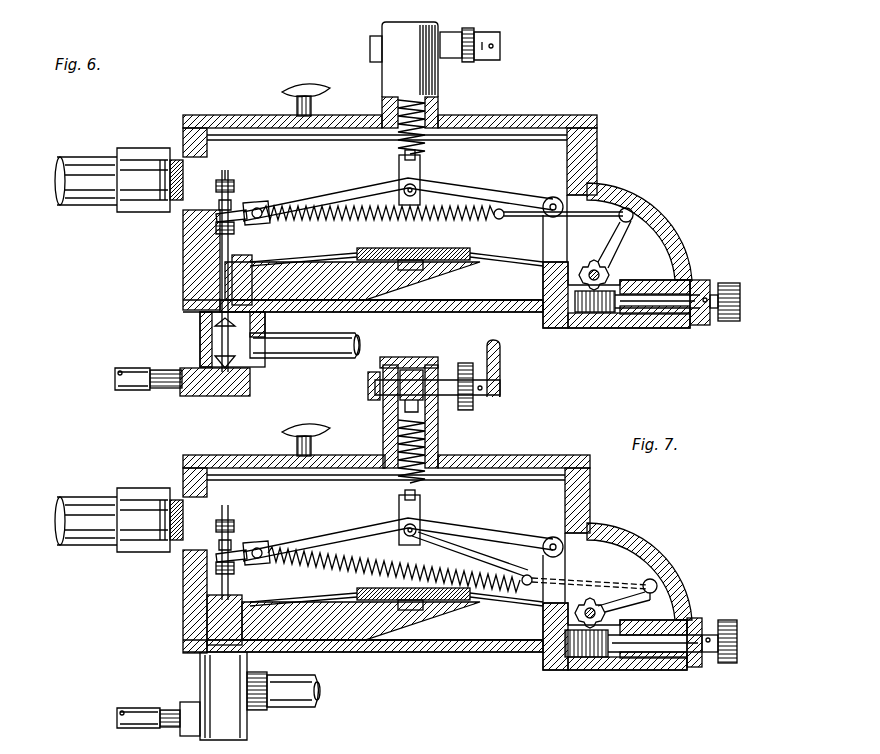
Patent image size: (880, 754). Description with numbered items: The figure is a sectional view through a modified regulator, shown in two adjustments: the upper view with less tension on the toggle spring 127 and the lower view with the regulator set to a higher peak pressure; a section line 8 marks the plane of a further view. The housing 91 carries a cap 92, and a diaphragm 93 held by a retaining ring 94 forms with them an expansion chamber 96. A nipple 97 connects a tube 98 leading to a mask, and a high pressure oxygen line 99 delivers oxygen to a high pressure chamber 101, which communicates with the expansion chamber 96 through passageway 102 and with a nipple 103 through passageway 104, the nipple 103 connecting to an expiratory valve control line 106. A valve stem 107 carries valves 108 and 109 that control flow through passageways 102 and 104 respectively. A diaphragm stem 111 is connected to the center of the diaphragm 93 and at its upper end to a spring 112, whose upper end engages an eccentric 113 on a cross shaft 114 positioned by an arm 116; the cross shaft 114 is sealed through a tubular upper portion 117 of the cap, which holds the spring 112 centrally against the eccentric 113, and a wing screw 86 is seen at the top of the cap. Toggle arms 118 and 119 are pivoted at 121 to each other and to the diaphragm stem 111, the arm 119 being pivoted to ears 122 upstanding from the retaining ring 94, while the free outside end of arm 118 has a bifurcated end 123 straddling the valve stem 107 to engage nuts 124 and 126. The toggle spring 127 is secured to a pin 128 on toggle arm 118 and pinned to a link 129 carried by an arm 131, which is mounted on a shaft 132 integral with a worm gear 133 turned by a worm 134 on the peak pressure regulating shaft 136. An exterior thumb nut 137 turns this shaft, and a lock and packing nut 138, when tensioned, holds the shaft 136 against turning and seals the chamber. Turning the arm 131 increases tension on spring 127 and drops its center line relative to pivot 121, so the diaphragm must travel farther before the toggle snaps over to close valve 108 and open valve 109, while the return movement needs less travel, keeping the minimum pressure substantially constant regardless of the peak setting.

In FIG. 6, the section line 8 is at (175, 140).
In FIG. 6, the wing screw 86 is at (282, 92).
In FIG. 6, the housing 91 is at (645, 200).
In FIG. 7, the housing 91 is at (578, 500).
In FIG. 6, the cap 92 is at (553, 127).
In FIG. 7, the cap 92 is at (565, 455).
In FIG. 6, the diaphragm 93 is at (480, 290).
In FIG. 7, the diaphragm 93 is at (478, 630).
In FIG. 6, the retaining ring 94 is at (525, 305).
In FIG. 7, the retaining ring 94 is at (520, 633).
In FIG. 6, the expansion chamber 96 is at (497, 140).
In FIG. 7, the expansion chamber 96 is at (530, 490).
In FIG. 6, the nipple 97 is at (162, 202).
In FIG. 7, the nipple 97 is at (162, 545).
In FIG. 6, the tube 98 is at (72, 160).
In FIG. 7, the tube 98 is at (80, 562).
In FIG. 6, the high pressure oxygen line 99 is at (292, 350).
In FIG. 7, the high pressure oxygen line 99 is at (292, 700).
In FIG. 6, the high pressure chamber 101 is at (210, 326).
In FIG. 6, the passageway 102 is at (210, 270).
In FIG. 7, the passageway 102 is at (331, 601).
In FIG. 6, the nipple 103 is at (165, 390).
In FIG. 7, the nipple 103 is at (170, 728).
In FIG. 6, the passageway 104 is at (210, 396).
In FIG. 6, the expiratory valve control line 106 is at (122, 372).
In FIG. 7, the expiratory valve control line 106 is at (120, 725).
In FIG. 6, the valve stem 107 is at (232, 198).
In FIG. 7, the valve stem 107 is at (212, 580).
In FIG. 6, the valve 108 is at (183, 300).
In FIG. 6, the valve 109 is at (210, 346).
In FIG. 6, the diaphragm stem 111 is at (420, 176).
In FIG. 7, the diaphragm stem 111 is at (420, 504).
In FIG. 6, the spring 112 is at (428, 118).
In FIG. 7, the spring 112 is at (440, 458).
In FIG. 7, the eccentric 113 is at (438, 400).
In FIG. 7, the cross shaft 114 is at (503, 392).
In FIG. 6, the arm 116 is at (503, 44).
In FIG. 7, the arm 116 is at (503, 362).
In FIG. 6, the tubular upper portion 117 is at (382, 72).
In FIG. 6, the toggle arm 118 is at (345, 197).
In FIG. 7, the toggle arm 118 is at (345, 527).
In FIG. 6, the toggle arm 119 is at (530, 198).
In FIG. 7, the toggle arm 119 is at (530, 535).
In FIG. 6, the pivot point 121 is at (478, 200).
In FIG. 6, the ear 122 is at (598, 191).
In FIG. 7, the ear 122 is at (578, 550).
In FIG. 6, the bifurcated end 123 is at (215, 216).
In FIG. 7, the bifurcated end 123 is at (237, 553).
In FIG. 6, the nut 124 is at (236, 185).
In FIG. 7, the nut 124 is at (236, 520).
In FIG. 6, the nut 126 is at (219, 226).
In FIG. 7, the nut 126 is at (214, 602).
In FIG. 7, the toggle spring 127 is at (470, 545).
In FIG. 7, the pin 128 is at (262, 548).
In FIG. 7, the link 129 is at (592, 596).
In FIG. 6, the arm 131 is at (638, 217).
In FIG. 7, the arm 131 is at (662, 600).
In FIG. 6, the shaft 132 is at (612, 248).
In FIG. 7, the shaft 132 is at (590, 650).
In FIG. 6, the worm gear 133 is at (640, 282).
In FIG. 7, the worm gear 133 is at (560, 650).
In FIG. 6, the worm 134 is at (605, 318).
In FIG. 7, the worm 134 is at (600, 660).
In FIG. 6, the peak pressure regulating shaft 136 is at (675, 325).
In FIG. 7, the peak pressure regulating shaft 136 is at (690, 670).
In FIG. 6, the thumb nut 137 is at (742, 292).
In FIG. 7, the thumb nut 137 is at (740, 633).
In FIG. 6, the lock and packing nut 138 is at (704, 290).
In FIG. 7, the lock and packing nut 138 is at (700, 628).